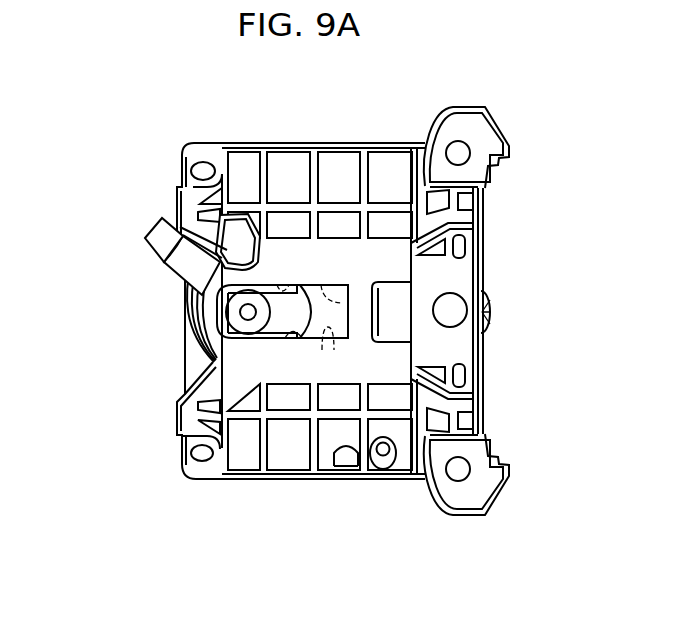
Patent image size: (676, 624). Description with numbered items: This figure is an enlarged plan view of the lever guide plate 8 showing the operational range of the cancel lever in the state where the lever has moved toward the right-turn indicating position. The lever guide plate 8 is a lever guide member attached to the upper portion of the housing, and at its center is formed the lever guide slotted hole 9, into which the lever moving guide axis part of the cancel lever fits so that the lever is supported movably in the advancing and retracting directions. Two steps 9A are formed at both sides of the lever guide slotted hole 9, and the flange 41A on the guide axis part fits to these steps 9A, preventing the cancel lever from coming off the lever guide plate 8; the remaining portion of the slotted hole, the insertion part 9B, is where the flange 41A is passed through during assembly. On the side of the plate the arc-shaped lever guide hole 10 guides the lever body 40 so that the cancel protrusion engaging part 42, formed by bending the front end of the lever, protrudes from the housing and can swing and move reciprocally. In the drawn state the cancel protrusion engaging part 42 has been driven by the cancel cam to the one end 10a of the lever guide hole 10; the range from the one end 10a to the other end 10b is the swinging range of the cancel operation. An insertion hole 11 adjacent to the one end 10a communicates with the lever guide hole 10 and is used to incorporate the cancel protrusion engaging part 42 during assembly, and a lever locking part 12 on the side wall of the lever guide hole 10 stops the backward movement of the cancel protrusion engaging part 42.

The lever guide plate 8 is at (353, 152).
The lever guide slotted hole 9 is at (332, 350).
The steps 9A is at (293, 285).
The insertion part 9B is at (322, 305).
The lever guide hole 10 is at (200, 313).
The one end of the lever guide hole 10a is at (193, 200).
The other end of the lever guide hole 10b is at (200, 364).
The insertion hole 11 is at (239, 222).
The lever locking part 12 is at (187, 333).
The lever body 40 is at (170, 278).
The flange 41A is at (245, 334).
The cancel protrusion engaging part 42 is at (147, 236).